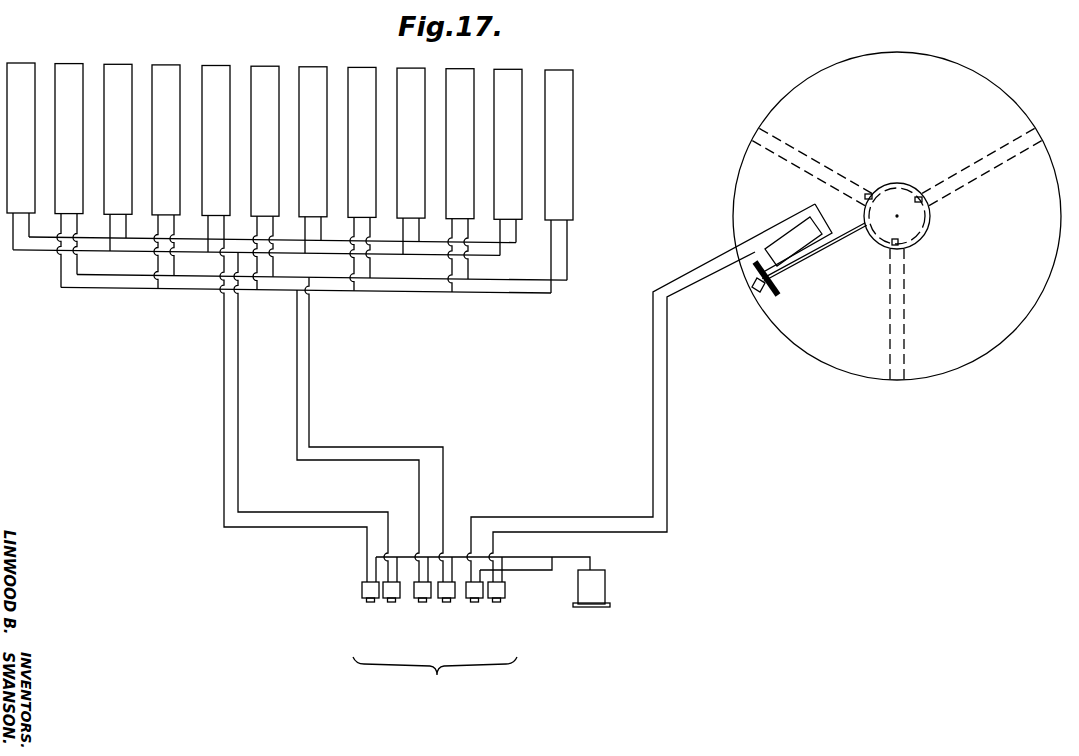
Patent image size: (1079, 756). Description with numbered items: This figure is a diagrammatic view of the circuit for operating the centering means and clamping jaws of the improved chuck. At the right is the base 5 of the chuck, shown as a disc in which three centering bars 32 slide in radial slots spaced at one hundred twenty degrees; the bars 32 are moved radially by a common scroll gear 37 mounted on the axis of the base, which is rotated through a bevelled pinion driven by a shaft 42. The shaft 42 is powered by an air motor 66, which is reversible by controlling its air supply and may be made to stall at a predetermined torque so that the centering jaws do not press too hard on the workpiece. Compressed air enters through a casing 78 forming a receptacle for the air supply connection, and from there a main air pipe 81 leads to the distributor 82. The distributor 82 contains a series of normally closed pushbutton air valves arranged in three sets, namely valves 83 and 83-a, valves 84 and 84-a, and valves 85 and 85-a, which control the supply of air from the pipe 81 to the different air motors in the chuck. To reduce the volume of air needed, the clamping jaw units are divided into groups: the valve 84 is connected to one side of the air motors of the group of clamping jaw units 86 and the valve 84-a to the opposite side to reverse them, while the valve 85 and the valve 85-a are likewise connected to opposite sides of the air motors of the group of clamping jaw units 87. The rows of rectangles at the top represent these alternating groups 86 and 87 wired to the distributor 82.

The base 5 is at (1012, 328).
The centering bars 32 is at (843, 177).
The scroll gear 37 is at (930, 236).
The shaft 42 is at (838, 246).
The air motor 66 is at (800, 250).
The casing 78 is at (605, 590).
The main air pipe 81 is at (579, 556).
The distributor 82 is at (356, 568).
The air valve 83 is at (504, 594).
The air valve 83-a is at (481, 600).
The air valve 84 is at (439, 602).
The air valve 84-a is at (415, 602).
The air valve 85 is at (385, 602).
The air valve 85-a is at (360, 597).
The group of clamping jaw units 86 is at (314, 178).
The group of clamping jaw units 87 is at (264, 159).